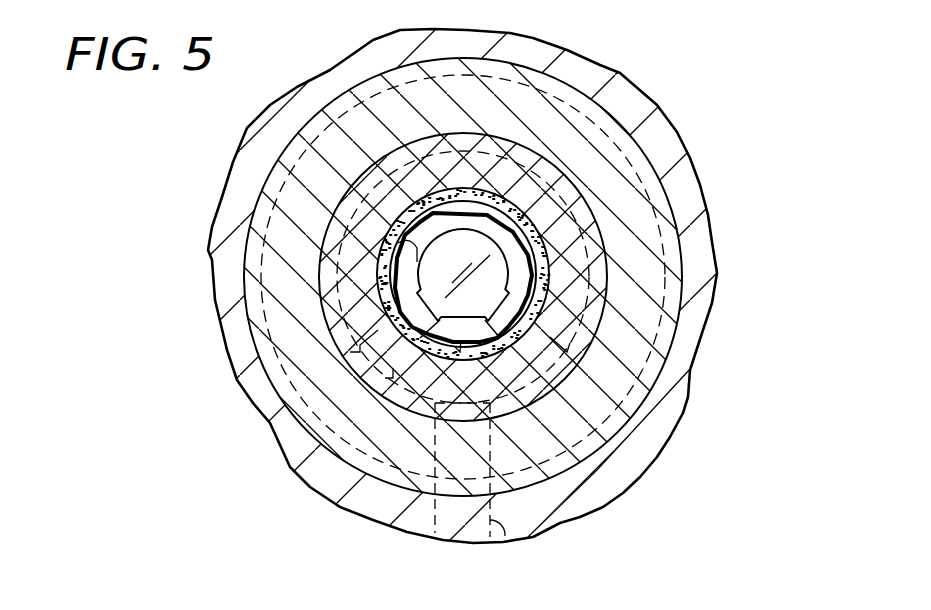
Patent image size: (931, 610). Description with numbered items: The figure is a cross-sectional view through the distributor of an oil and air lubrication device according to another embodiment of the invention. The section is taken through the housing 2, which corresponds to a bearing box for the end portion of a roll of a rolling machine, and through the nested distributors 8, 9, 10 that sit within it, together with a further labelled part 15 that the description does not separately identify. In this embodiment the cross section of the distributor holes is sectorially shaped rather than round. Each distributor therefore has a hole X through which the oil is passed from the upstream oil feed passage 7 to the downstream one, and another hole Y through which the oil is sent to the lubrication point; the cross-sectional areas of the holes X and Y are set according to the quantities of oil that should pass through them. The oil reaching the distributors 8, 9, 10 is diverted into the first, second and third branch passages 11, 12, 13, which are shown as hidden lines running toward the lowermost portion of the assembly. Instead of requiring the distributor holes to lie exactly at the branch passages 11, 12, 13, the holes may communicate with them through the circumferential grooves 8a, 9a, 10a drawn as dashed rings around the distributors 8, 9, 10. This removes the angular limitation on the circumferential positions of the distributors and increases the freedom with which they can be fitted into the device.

The housing 2 is at (441, 286).
The housing wall 15 is at (258, 389).
The oil feed passage 7 is at (598, 268).
The first distributor 8 is at (524, 277).
The second distributor 9 is at (524, 277).
The third distributor 10 is at (524, 277).
The circumferential groove 8a is at (533, 277).
The circumferential groove 9a is at (533, 277).
The circumferential groove 10a is at (615, 110).
The first branch passage 11 is at (512, 499).
The second branch passage 12 is at (512, 499).
The third branch passage 13 is at (505, 543).
The hole X is at (398, 243).
The hole Y is at (460, 328).